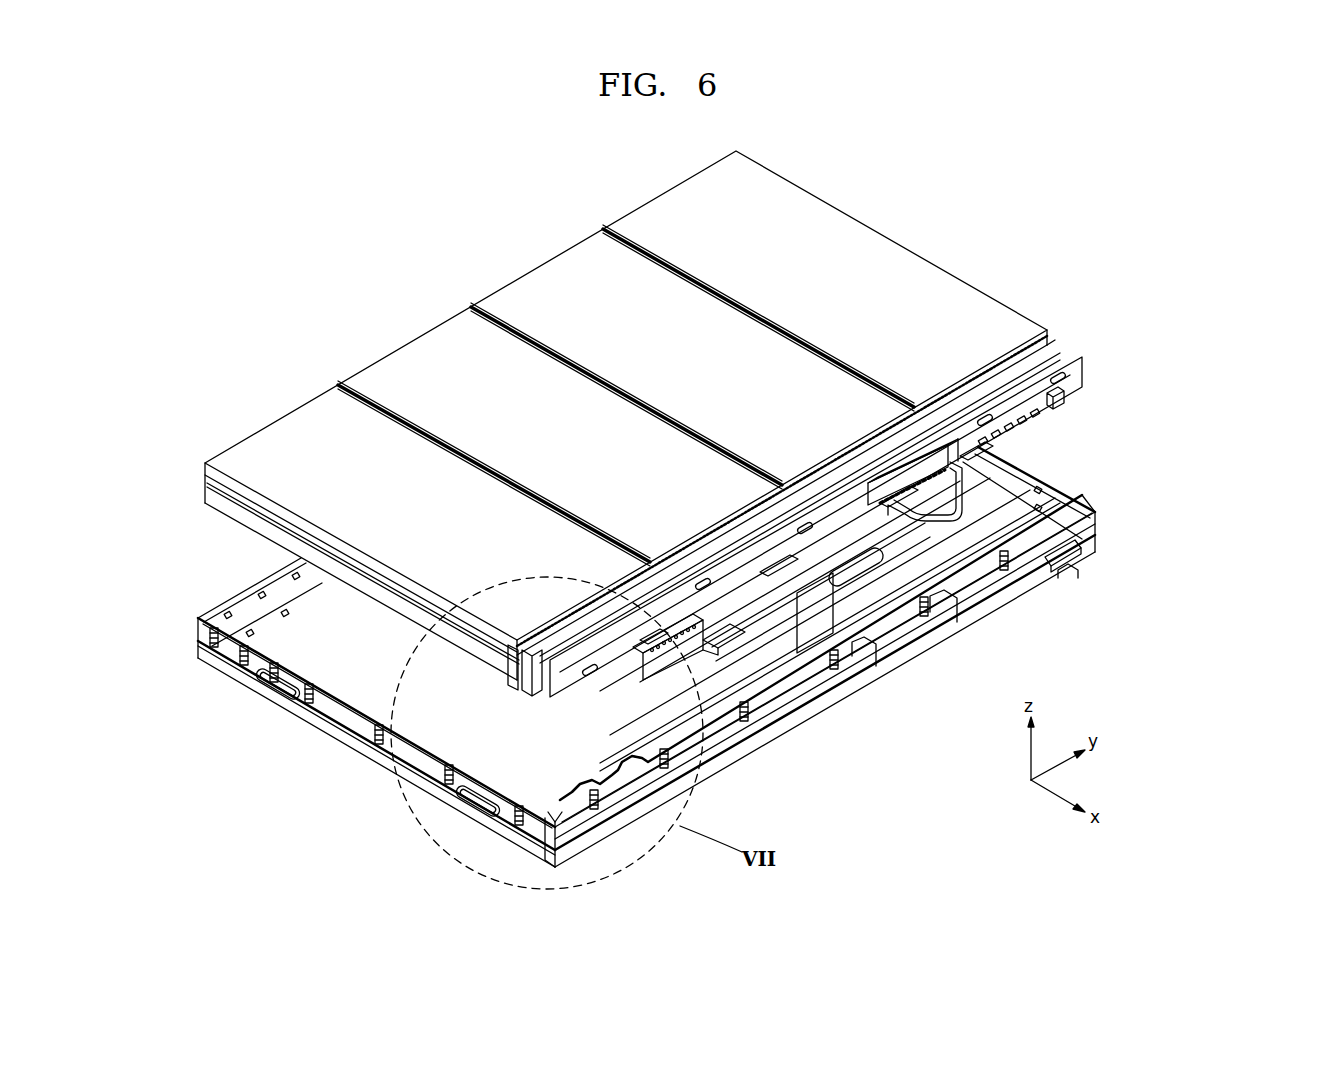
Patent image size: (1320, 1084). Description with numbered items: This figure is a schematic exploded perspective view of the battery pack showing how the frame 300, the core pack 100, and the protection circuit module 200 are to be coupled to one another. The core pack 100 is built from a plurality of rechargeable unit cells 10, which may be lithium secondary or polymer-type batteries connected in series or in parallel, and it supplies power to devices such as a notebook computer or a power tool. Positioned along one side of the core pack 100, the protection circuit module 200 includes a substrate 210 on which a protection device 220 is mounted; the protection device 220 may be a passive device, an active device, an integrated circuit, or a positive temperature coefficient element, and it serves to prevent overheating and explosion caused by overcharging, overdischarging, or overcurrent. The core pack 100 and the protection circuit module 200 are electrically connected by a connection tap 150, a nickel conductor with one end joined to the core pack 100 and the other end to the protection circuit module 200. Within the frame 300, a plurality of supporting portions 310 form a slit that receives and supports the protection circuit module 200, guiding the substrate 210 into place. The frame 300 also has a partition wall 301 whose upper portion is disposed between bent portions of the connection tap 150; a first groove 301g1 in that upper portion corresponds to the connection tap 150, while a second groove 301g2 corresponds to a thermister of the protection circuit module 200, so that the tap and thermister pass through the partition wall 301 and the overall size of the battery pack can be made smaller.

The unit cell 10 is at (652, 213).
The core pack 100 is at (630, 414).
The connection tap 150 is at (518, 687).
The protection circuit module 200 is at (1097, 356).
The substrate 210 is at (1068, 390).
The protection device 220 is at (943, 462).
The frame 300 is at (709, 669).
The partition wall 301 is at (515, 798).
The first groove 301g1 is at (567, 788).
The second groove 301g2 is at (612, 768).
The supporting portion 310 is at (603, 792).